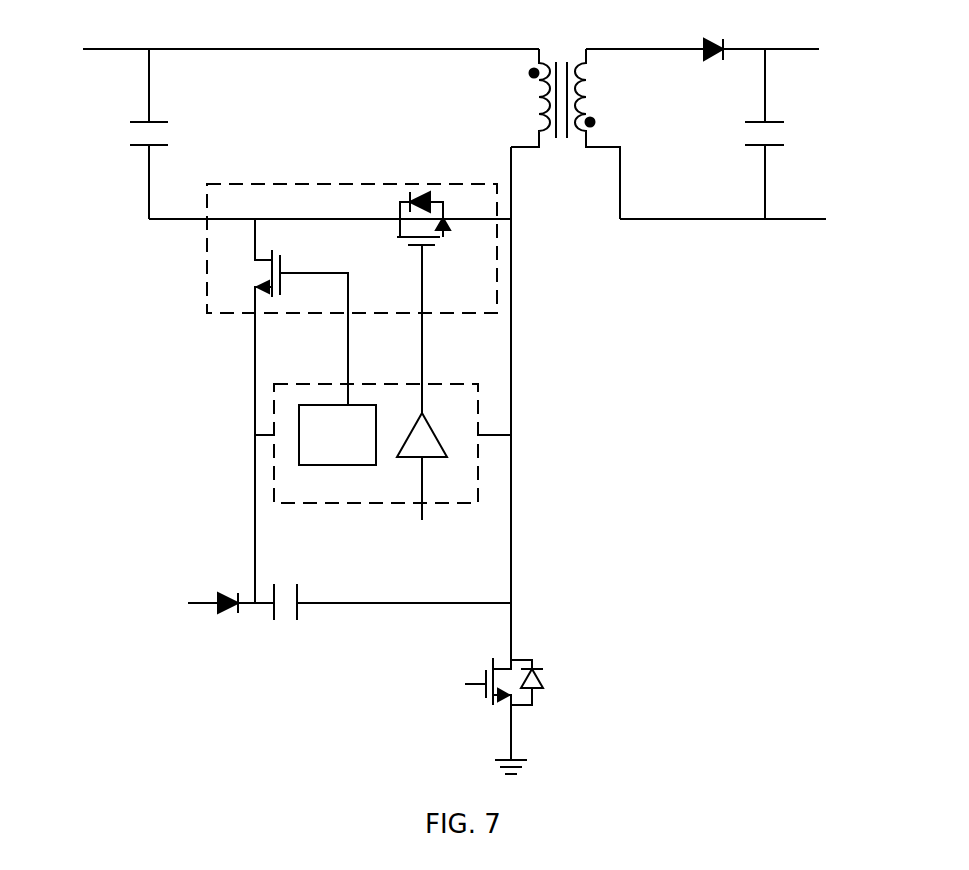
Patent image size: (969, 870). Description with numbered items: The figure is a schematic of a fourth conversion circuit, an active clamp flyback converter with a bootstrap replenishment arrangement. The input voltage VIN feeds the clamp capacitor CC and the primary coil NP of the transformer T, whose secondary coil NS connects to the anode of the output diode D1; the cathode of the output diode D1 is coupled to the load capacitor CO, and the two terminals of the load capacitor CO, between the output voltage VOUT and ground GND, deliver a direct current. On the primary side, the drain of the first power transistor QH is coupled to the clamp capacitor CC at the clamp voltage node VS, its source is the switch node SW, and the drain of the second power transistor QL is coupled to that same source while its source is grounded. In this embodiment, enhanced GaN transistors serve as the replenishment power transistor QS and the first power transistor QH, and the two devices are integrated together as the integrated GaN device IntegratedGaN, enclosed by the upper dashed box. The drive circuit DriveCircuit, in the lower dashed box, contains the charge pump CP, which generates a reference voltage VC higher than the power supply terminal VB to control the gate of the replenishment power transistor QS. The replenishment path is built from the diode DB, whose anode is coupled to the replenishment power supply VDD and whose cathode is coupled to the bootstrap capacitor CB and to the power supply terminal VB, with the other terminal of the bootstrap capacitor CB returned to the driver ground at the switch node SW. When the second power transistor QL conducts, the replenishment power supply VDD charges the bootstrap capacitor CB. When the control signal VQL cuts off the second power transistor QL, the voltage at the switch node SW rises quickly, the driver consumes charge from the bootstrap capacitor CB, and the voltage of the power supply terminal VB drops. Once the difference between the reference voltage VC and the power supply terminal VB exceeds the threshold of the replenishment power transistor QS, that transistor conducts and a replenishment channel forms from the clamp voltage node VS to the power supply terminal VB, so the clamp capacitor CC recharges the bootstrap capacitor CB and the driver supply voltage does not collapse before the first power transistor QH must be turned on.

The input voltage VIN is at (288, 50).
The clamp capacitor CC is at (136, 134).
The clamp voltage node VS is at (330, 204).
The integrated GaN transistors IntegratedGaN is at (297, 248).
The replenishment power transistor QS is at (249, 411).
The reference voltage VC is at (314, 326).
The first power transistor QH is at (393, 301).
The switch node SW is at (531, 403).
The transformer T is at (560, 79).
The primary coil NP is at (521, 98).
The secondary coil NS is at (603, 134).
The output diode D1 is at (702, 34).
The output voltage VOUT is at (819, 50).
The load capacitor CO is at (781, 134).
The ground GND is at (749, 219).
The drive circuit DriveCircuit is at (392, 452).
The charge pump CP is at (337, 435).
The power supply terminal of the drive circuit VB is at (243, 447).
The replenishment power supply VDD is at (173, 602).
The diode DB is at (245, 621).
The bootstrap capacitor CB is at (392, 616).
The second power transistor QL is at (530, 716).
The control signal VQL is at (445, 684).